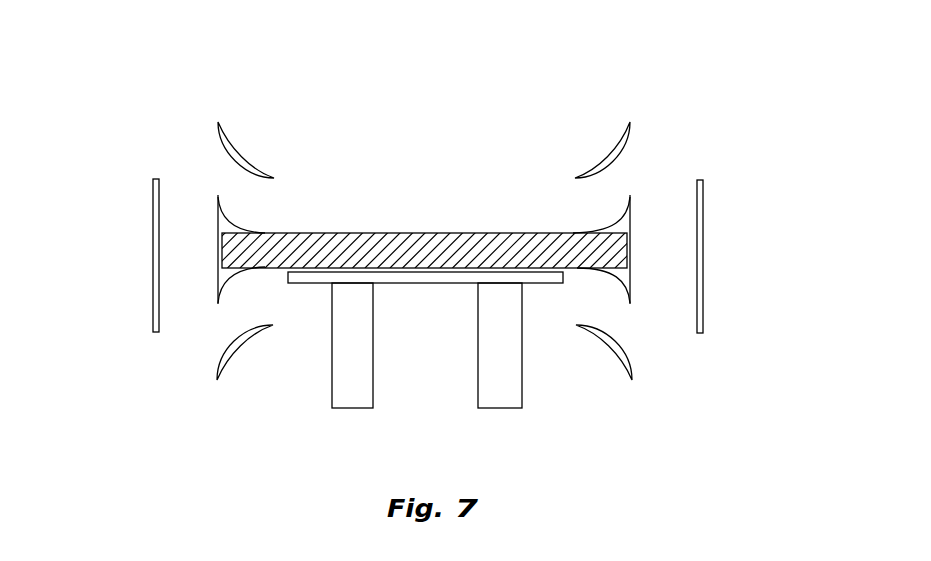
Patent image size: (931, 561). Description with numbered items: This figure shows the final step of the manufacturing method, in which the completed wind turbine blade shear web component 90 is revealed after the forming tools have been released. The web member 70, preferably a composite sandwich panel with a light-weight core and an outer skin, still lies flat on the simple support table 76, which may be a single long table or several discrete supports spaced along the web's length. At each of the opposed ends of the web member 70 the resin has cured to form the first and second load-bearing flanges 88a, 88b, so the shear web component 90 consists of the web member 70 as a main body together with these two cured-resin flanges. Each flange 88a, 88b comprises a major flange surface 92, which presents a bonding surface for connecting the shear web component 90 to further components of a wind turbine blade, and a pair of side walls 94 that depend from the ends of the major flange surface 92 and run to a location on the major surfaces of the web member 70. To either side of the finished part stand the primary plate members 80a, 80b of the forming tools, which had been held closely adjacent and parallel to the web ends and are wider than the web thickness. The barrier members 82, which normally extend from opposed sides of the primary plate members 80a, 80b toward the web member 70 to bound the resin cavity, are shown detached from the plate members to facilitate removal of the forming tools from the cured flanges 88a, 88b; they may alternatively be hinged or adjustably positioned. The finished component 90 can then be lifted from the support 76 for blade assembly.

The web member 70 is at (470, 232).
The support table 76 is at (391, 275).
The primary plate member 80a is at (153, 262).
The primary plate member 80b is at (703, 267).
The barrier members 82 is at (243, 159).
The first load-bearing flange 88a is at (216, 214).
The second load-bearing flange 88b is at (625, 228).
The wind turbine blade shear web component 90 is at (471, 148).
The major flange surface 92 is at (217, 267).
The side walls 94 is at (222, 227).